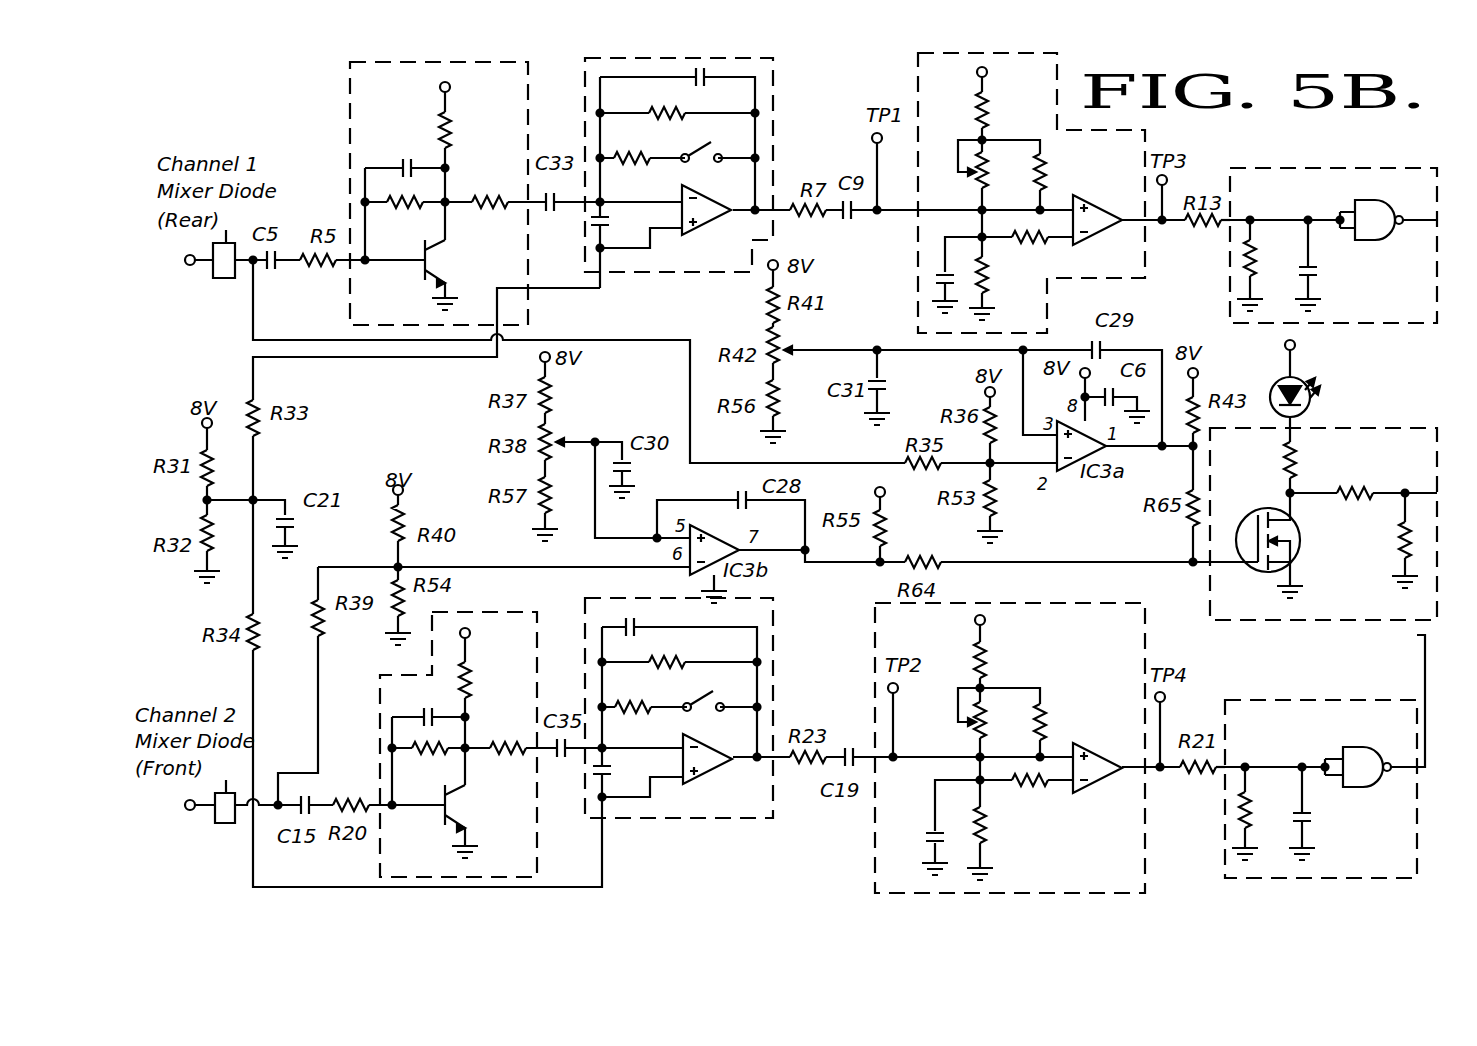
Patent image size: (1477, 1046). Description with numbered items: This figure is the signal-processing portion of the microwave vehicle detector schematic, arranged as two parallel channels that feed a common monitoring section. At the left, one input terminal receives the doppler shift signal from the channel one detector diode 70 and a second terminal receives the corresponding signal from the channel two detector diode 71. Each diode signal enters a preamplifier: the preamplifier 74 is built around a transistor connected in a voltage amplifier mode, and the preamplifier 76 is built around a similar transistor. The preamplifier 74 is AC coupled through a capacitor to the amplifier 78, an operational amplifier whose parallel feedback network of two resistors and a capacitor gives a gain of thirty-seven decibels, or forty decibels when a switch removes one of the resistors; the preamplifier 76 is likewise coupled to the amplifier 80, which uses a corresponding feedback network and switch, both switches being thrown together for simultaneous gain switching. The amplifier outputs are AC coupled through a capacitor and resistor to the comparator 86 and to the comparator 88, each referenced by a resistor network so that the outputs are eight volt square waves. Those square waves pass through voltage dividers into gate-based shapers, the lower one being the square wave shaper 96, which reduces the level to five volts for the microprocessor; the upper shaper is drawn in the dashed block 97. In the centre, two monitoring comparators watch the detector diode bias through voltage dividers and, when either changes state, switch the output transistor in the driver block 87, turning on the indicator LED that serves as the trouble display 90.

The detector diode 70 is at (204, 242).
The detector diode 71 is at (221, 789).
The preamplifier 74 is at (350, 76).
The preamplifier 76 is at (380, 866).
The amplifier 78 is at (773, 66).
The amplifier 80 is at (657, 820).
The comparator 86 is at (918, 75).
The comparator 88 is at (875, 855).
The LED driver transistor circuit 87 is at (1310, 623).
The trouble display 90 is at (1325, 385).
The square wave shaper 96 is at (1290, 700).
The channel 1 output NAND gate circuit 97 is at (1336, 168).